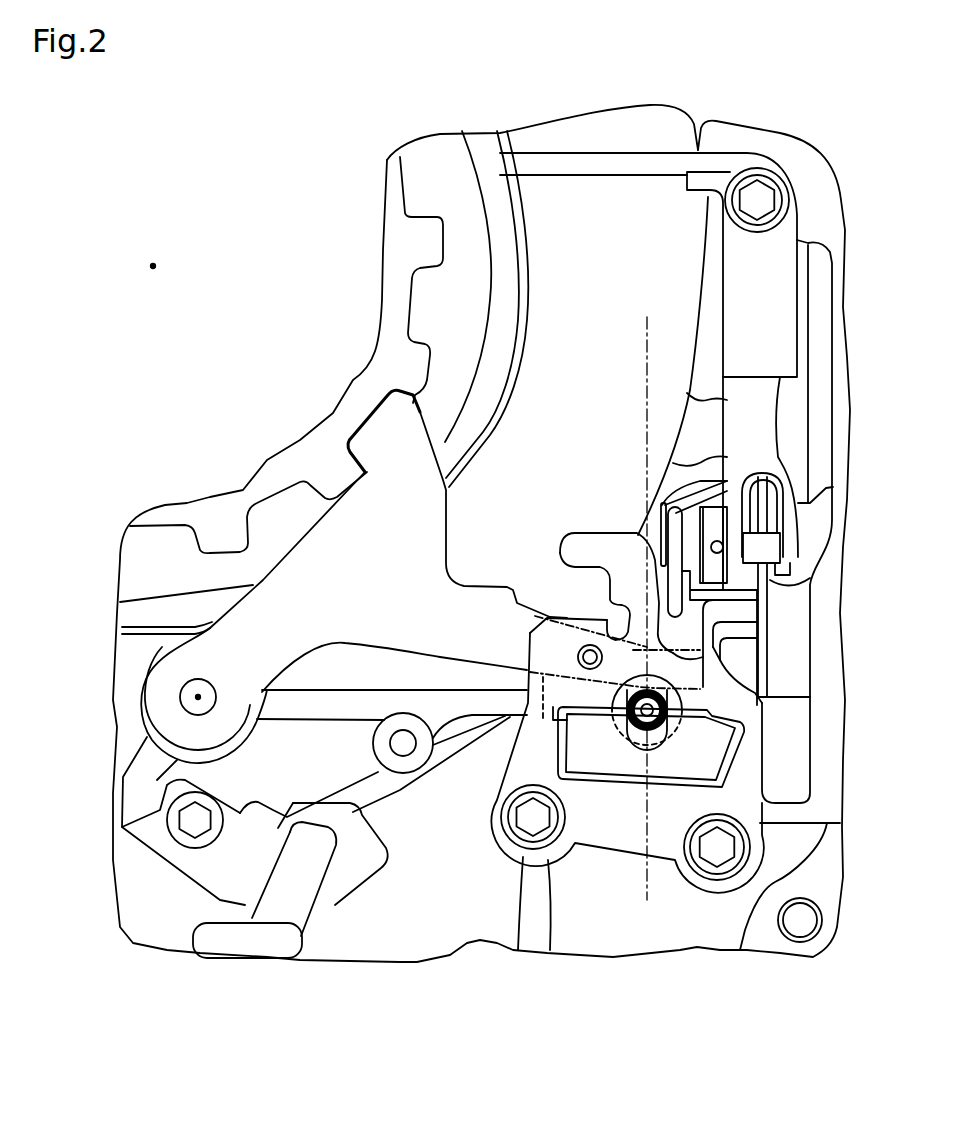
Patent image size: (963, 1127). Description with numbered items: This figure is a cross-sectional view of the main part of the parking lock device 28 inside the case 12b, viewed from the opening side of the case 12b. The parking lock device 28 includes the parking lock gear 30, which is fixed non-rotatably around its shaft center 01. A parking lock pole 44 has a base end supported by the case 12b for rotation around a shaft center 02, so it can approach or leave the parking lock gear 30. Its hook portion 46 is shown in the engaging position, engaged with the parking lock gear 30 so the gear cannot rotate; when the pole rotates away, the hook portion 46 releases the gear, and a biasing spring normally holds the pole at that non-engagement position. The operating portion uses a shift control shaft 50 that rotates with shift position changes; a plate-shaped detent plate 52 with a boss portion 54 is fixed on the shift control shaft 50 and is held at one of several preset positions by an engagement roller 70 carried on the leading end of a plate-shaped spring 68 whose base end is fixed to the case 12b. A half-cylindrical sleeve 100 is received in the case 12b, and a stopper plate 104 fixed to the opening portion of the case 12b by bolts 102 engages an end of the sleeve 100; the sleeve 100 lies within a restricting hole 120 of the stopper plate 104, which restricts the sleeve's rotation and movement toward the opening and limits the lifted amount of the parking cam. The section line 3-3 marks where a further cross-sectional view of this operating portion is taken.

The shaft center 01 is at (156, 266).
The shaft center 02 is at (196, 697).
The line 3- 3 is at (647, 317).
The case 12b is at (767, 937).
The parking lock device 28 is at (628, 248).
The parking lock gear 30 is at (435, 240).
The parking lock pole 44 is at (233, 628).
The hook portion 46 is at (377, 425).
The shift control shaft 50 is at (688, 528).
The detent plate 52 is at (763, 643).
The boss portion 54 is at (773, 578).
The plate-shaped spring 68 is at (771, 423).
The engagement roller 70 is at (771, 543).
The sleeve 100 is at (622, 770).
The bolts 102 is at (721, 870).
The stopper plate 104 is at (537, 644).
The restricting hole 120 is at (637, 687).